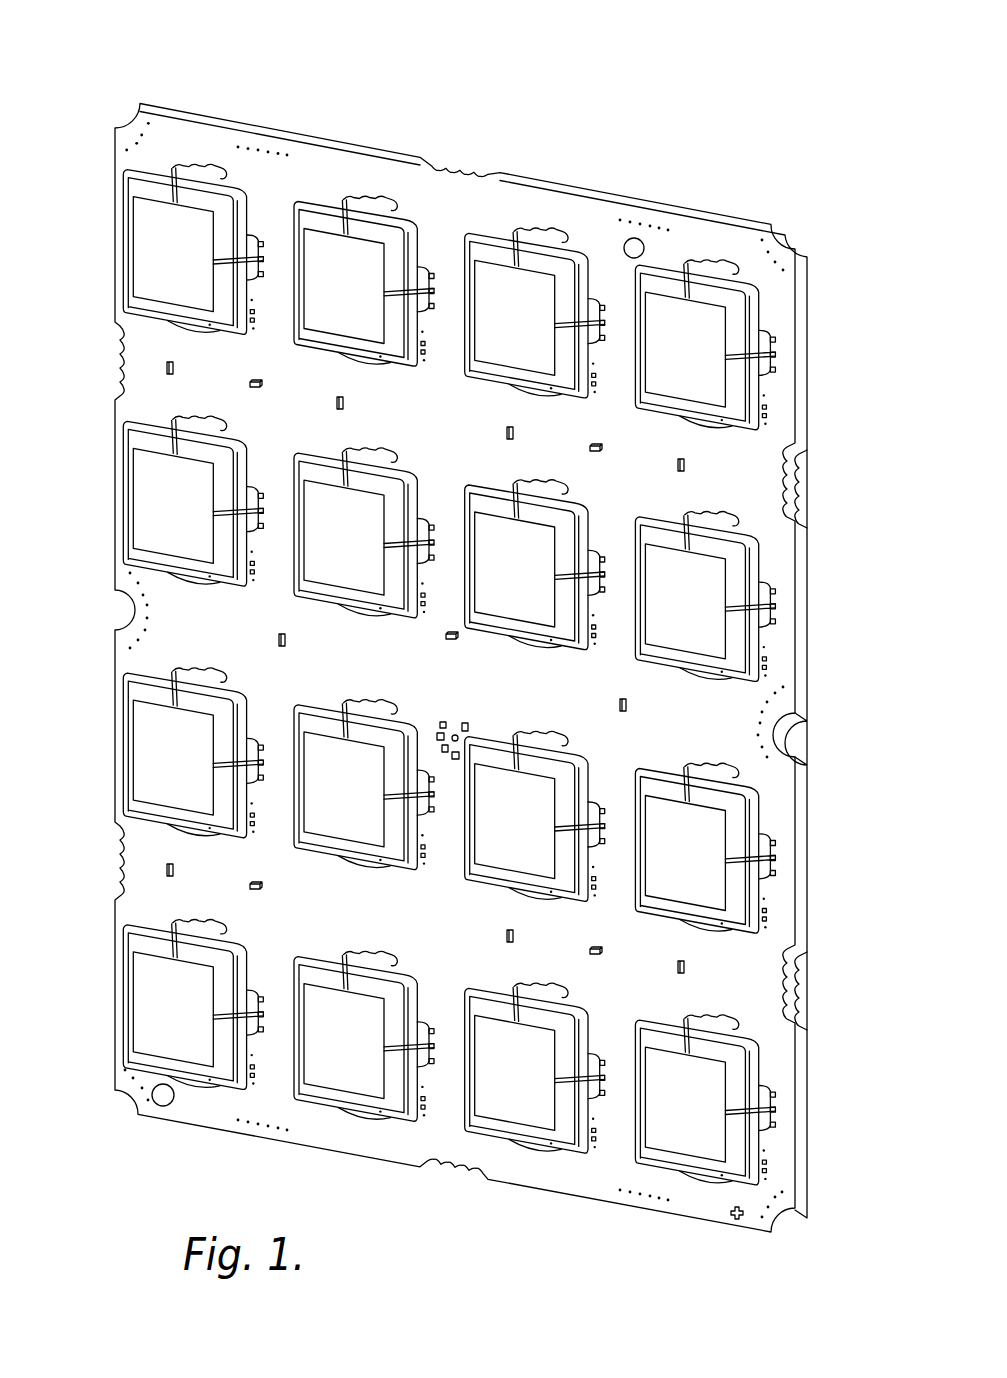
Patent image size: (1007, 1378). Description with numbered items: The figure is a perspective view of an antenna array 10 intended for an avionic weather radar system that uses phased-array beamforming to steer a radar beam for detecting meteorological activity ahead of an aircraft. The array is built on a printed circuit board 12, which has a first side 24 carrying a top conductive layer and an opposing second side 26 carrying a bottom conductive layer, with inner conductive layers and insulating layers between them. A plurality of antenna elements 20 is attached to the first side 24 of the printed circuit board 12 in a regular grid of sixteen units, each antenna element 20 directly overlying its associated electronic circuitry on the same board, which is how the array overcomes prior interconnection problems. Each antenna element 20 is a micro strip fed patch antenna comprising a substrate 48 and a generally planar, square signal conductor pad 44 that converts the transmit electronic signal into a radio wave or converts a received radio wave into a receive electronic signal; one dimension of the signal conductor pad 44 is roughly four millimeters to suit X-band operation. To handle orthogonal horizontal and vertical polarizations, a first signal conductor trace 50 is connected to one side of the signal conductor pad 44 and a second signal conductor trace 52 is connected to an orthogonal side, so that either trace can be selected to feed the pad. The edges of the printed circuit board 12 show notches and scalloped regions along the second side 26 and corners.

The antenna array 10 is at (437, 649).
The printed circuit board 12 is at (379, 1178).
The antenna element 20 is at (396, 626).
The first side 24 is at (202, 1116).
The second side 26 is at (782, 213).
The signal conductor pad 44 is at (145, 288).
The substrate 48 is at (138, 183).
The first signal conductor trace 50 is at (180, 172).
The second signal conductor trace 52 is at (240, 262).